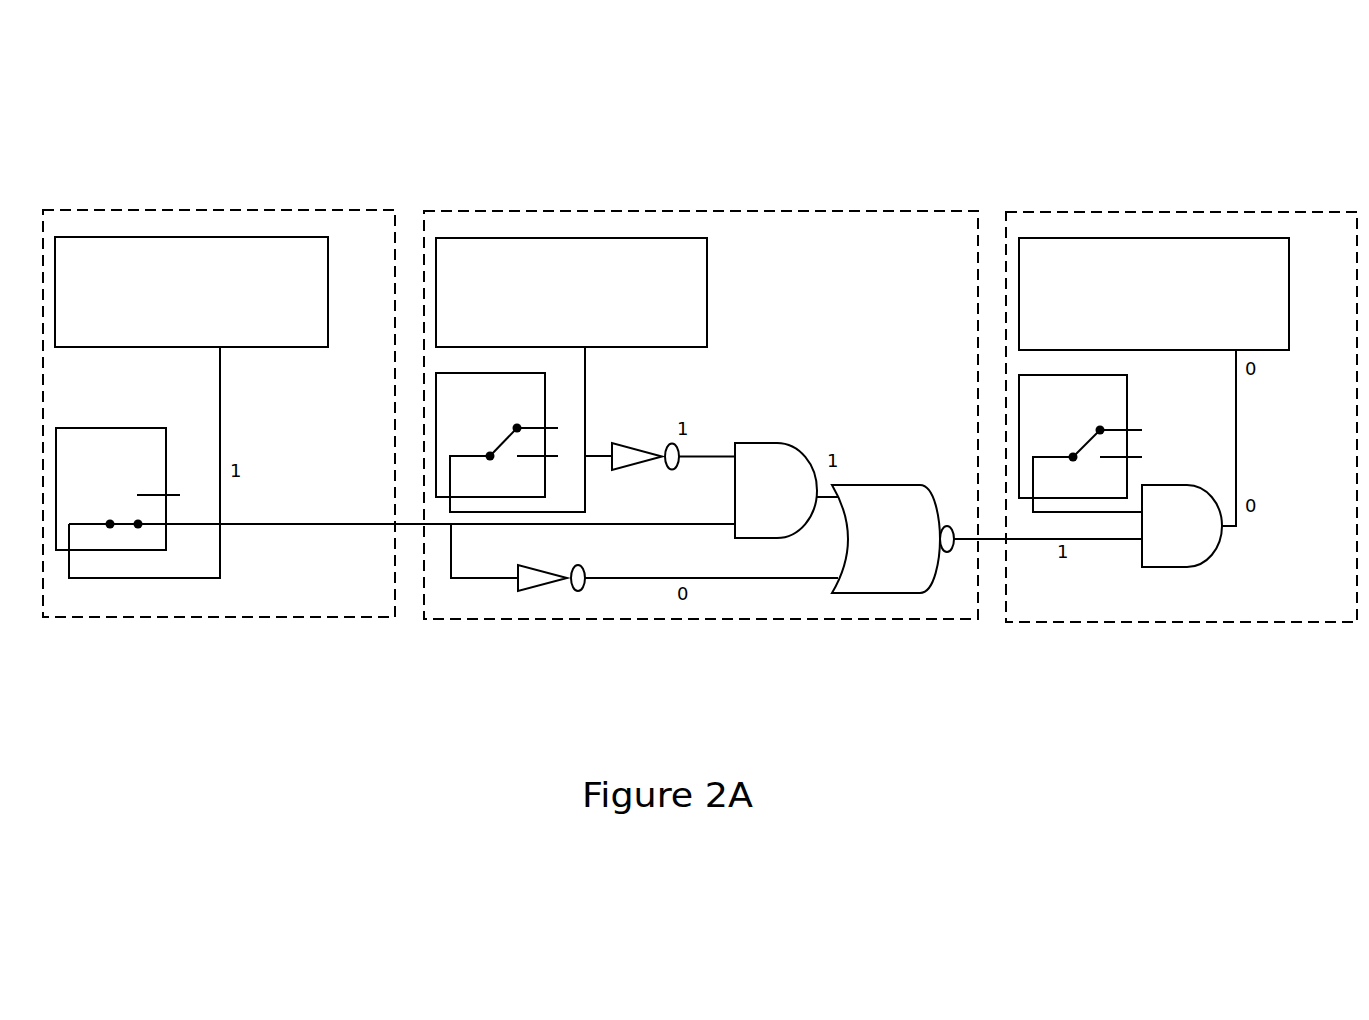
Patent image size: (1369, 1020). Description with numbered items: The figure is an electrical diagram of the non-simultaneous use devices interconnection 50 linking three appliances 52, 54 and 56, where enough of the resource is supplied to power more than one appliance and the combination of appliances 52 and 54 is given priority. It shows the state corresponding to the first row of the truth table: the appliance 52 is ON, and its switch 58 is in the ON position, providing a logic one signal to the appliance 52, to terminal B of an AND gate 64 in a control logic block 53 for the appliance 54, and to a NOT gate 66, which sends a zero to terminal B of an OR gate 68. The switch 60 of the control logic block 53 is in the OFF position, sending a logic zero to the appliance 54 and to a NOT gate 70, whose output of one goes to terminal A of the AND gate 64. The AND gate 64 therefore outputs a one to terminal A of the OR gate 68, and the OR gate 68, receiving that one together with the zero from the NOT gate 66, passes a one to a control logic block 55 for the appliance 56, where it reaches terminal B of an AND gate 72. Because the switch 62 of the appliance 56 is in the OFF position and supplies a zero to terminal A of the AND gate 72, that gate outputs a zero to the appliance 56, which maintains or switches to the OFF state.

The non-simultaneous use devices interconnection 50 is at (1018, 157).
The appliance 52 is at (191, 292).
The control logic block 53 is at (620, 197).
The appliance 54 is at (571, 292).
The control logic block 55 is at (1187, 192).
The appliance 56 is at (1154, 294).
The switch 58 is at (127, 489).
The switch 60 is at (507, 435).
The switch 62 is at (1096, 436).
The AND gate 64 is at (776, 490).
The NOT gate 66 is at (545, 592).
The OR gate 68 is at (893, 539).
The NOT gate 70 is at (639, 442).
The AND gate 72 is at (1182, 526).